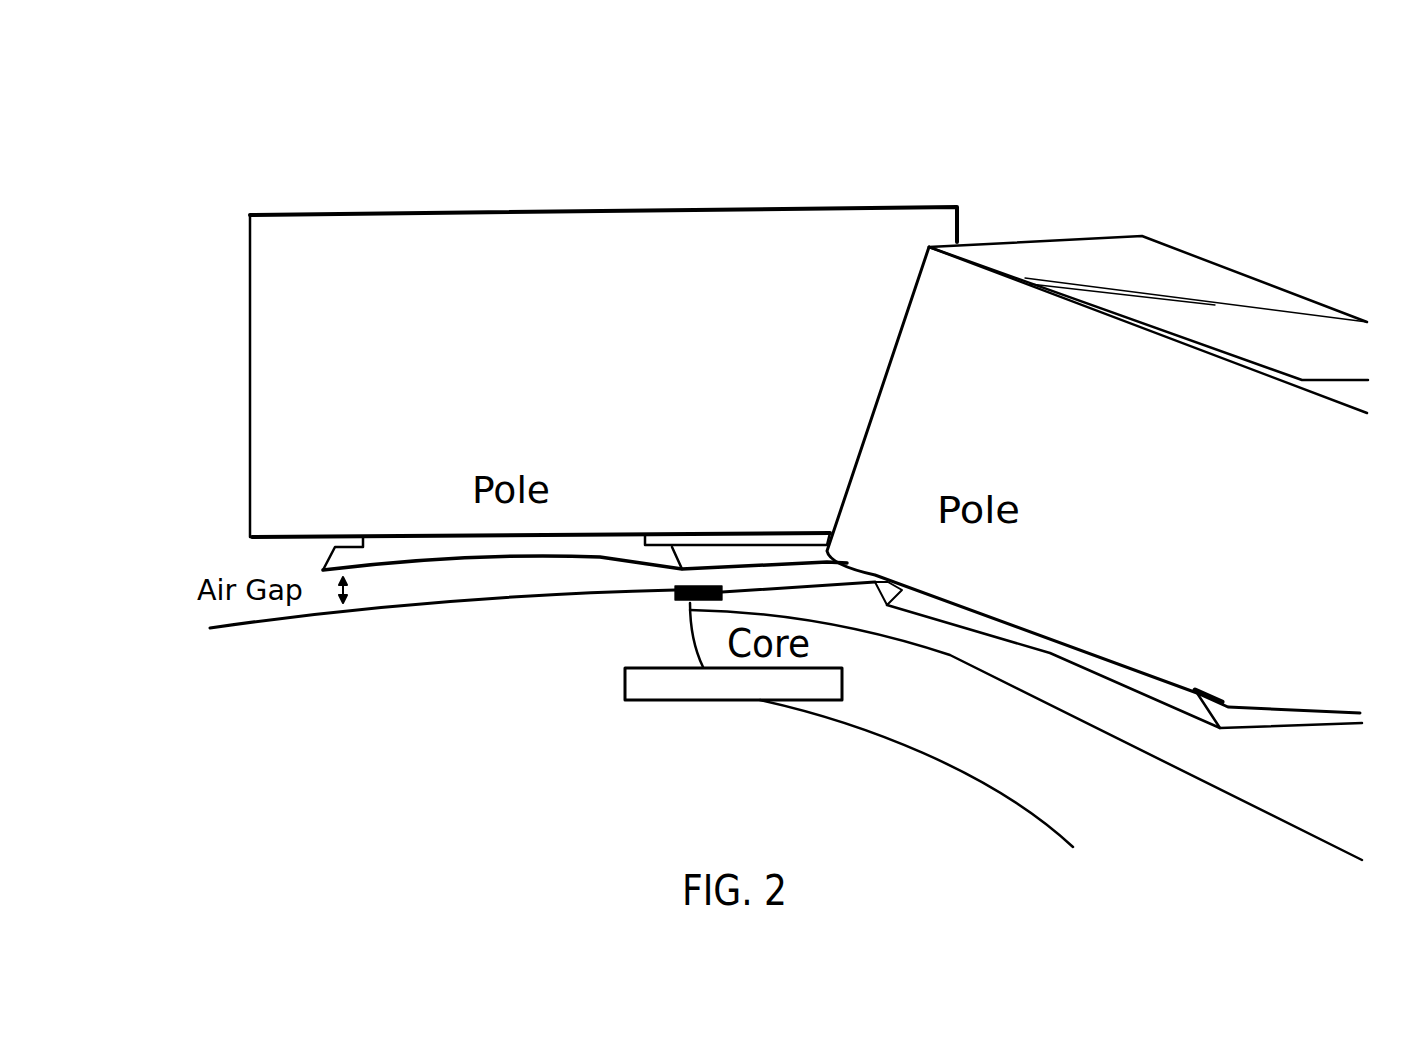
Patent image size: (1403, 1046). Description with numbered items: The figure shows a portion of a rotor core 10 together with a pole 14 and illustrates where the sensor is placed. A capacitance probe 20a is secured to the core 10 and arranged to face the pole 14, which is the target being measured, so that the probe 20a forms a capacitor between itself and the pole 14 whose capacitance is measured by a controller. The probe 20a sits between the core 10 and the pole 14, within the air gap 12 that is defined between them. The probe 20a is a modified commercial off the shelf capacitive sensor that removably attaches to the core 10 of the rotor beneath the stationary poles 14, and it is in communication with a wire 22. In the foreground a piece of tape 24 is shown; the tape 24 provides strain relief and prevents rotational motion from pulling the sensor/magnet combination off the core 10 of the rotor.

The core 10 is at (937, 625).
The air gap 12 is at (288, 532).
The pole 14 is at (396, 220).
The capacitance probe 20a is at (647, 611).
The wire 22 is at (884, 754).
The tape 24 is at (597, 709).